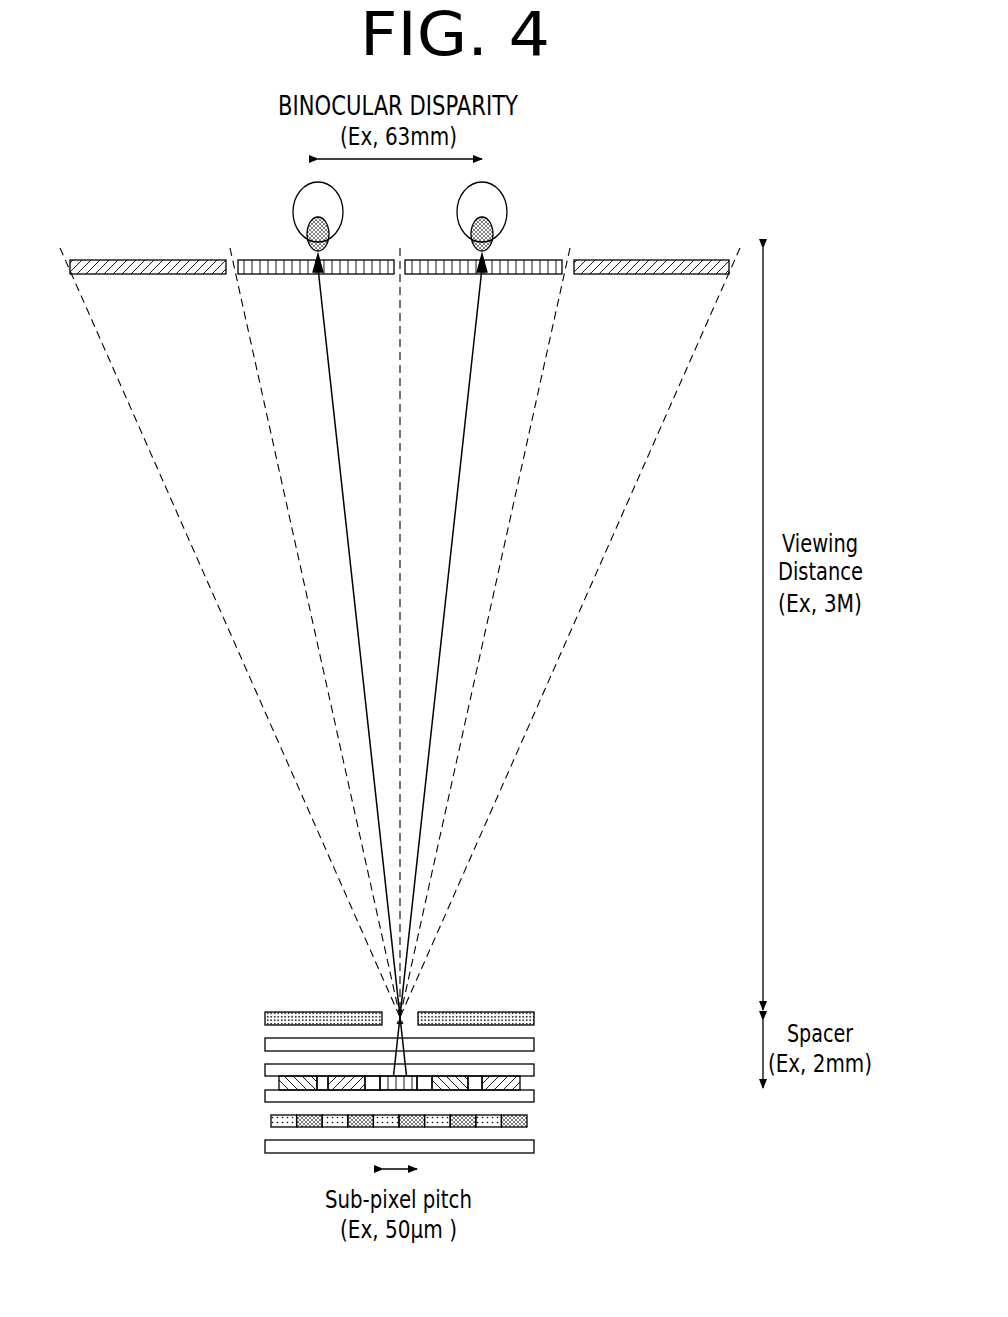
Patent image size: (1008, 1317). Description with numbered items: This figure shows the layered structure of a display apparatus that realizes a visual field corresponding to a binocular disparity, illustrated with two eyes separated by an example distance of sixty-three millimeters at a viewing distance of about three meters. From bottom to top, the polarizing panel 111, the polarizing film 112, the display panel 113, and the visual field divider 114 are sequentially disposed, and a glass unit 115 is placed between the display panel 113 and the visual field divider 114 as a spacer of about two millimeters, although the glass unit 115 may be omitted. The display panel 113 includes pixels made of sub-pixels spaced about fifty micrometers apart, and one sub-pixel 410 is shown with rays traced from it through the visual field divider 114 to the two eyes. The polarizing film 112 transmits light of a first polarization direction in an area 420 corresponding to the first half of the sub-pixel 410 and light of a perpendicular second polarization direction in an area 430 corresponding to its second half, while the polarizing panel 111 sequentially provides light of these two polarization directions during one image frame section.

The polarizing panel 111 is at (265, 1146).
The polarizing film 112 is at (271, 1121).
The display panel 113 is at (262, 1064).
The visual field divider 114 is at (265, 1018).
The glass unit 115 is at (265, 1044).
The sub-pixel 410 is at (408, 1077).
The area corresponding to a first half of one sub-pixel 420 is at (386, 1128).
The area corresponding to the second half of the sub-pixel 430 is at (411, 1128).